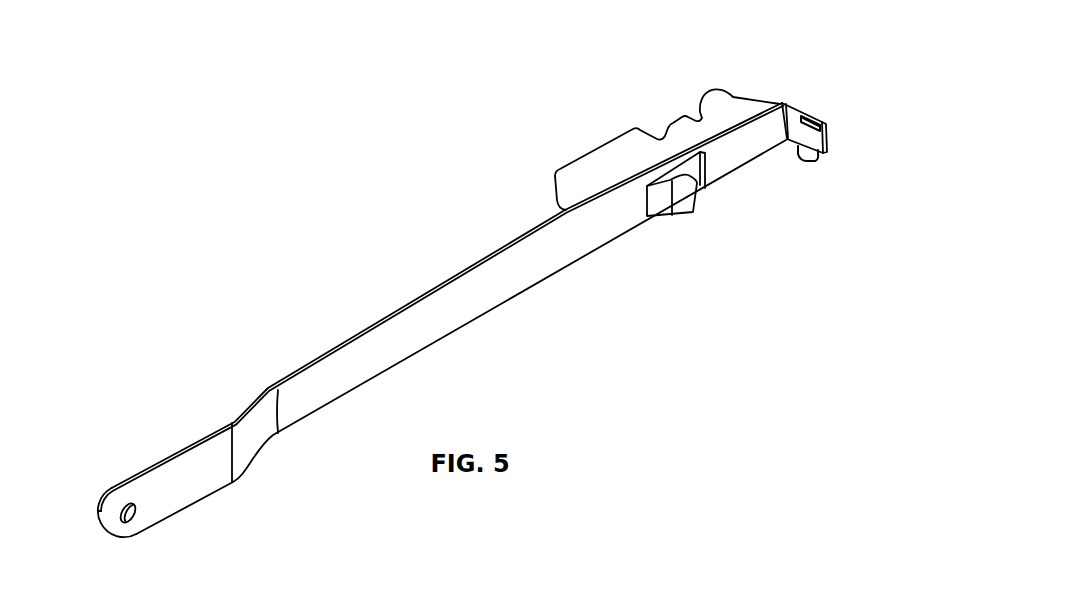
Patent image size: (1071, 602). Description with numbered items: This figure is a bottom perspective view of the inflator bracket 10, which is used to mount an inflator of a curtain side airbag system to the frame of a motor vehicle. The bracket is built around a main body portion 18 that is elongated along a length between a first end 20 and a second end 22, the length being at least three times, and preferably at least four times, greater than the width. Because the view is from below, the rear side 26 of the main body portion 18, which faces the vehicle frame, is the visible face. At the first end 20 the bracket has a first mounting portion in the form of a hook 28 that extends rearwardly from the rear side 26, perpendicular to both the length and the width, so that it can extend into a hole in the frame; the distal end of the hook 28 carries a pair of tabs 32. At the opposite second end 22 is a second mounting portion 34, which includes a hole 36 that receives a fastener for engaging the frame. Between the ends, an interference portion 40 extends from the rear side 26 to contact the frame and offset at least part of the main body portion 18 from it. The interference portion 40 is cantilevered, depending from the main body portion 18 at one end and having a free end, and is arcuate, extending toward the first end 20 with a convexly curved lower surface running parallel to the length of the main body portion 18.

The inflator bracket 10 is at (222, 241).
The main body portion 18 is at (497, 311).
The first end 20 is at (735, 99).
The second end 22 is at (100, 525).
The rear side 26 is at (360, 365).
The hook 28 is at (791, 138).
The tabs 32 is at (811, 121).
The second mounting portion 34 is at (109, 464).
The hole 36 is at (145, 511).
The interference portion 40 is at (677, 222).